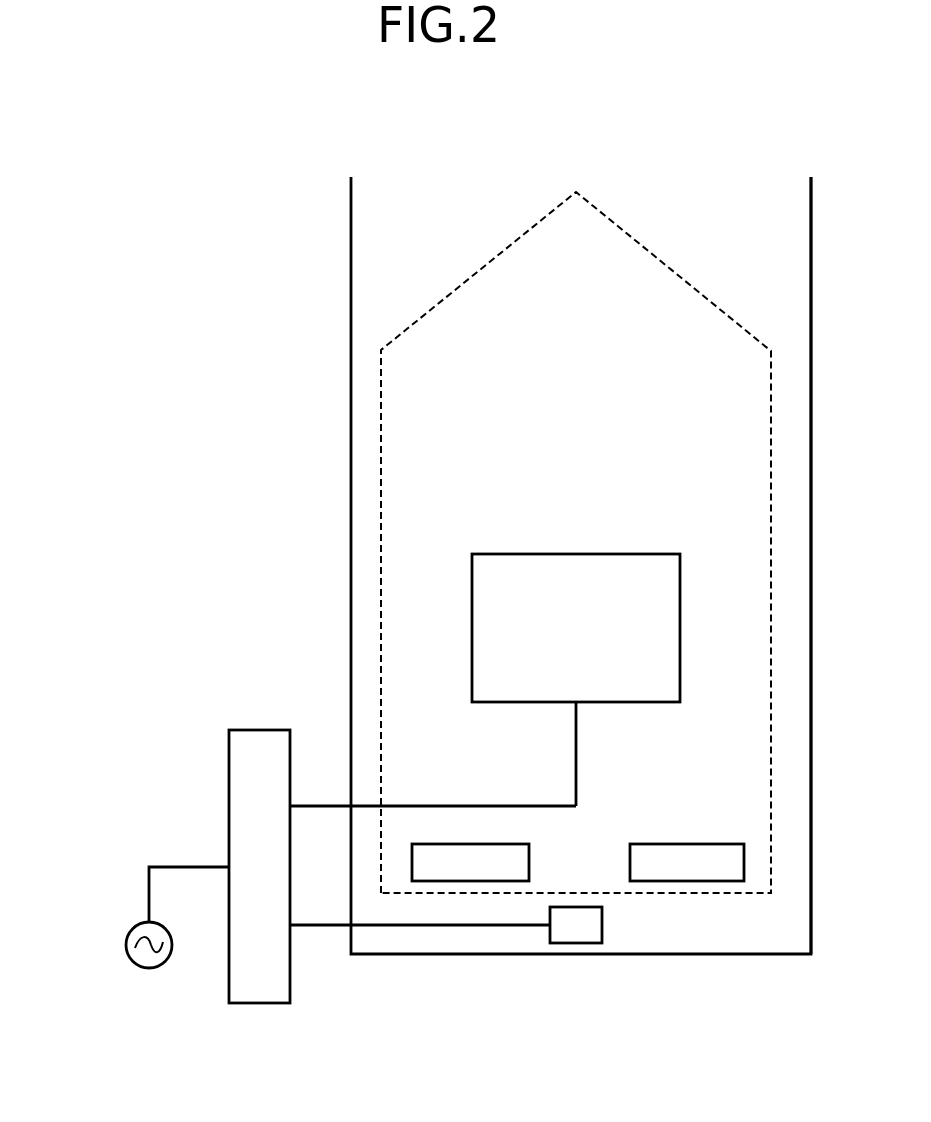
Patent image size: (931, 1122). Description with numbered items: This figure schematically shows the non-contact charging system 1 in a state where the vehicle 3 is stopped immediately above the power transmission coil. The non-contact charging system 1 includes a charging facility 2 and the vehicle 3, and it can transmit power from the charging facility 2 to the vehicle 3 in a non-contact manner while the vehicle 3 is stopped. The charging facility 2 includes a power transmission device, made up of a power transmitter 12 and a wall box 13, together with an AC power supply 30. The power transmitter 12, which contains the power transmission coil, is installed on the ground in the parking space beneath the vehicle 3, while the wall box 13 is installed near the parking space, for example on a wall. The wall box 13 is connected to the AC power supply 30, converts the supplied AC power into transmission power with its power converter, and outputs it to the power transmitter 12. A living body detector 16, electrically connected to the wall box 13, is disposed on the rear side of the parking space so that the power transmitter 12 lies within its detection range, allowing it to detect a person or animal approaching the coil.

The non-contact charging system 1 is at (781, 139).
The charging facility 2 is at (275, 186).
The vehicle 3 is at (504, 250).
The power transmitter 12 is at (472, 624).
The wall box 13 is at (258, 1004).
The living body detector 16 is at (573, 944).
The AC power supply 30 is at (125, 945).